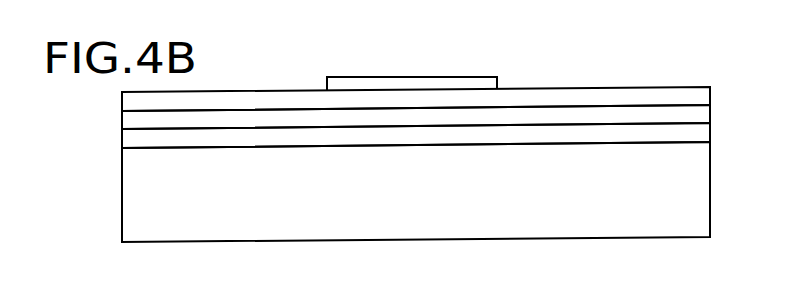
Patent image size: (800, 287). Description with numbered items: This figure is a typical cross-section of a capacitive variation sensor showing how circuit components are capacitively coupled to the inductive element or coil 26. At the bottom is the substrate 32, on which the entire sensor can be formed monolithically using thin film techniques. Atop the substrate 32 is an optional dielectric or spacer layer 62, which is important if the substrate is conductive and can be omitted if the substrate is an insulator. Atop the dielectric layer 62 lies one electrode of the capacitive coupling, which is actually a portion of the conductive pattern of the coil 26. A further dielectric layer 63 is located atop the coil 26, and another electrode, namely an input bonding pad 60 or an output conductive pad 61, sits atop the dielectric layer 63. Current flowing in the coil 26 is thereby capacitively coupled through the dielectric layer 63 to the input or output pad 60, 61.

The substrate 32 is at (712, 208).
The dielectric or spacer layer 62 is at (712, 132).
The coil 26 is at (712, 113).
The dielectric layer 63 is at (712, 93).
The input bonding pad 60 is at (482, 57).
The output conductive pad 61 is at (412, 83).